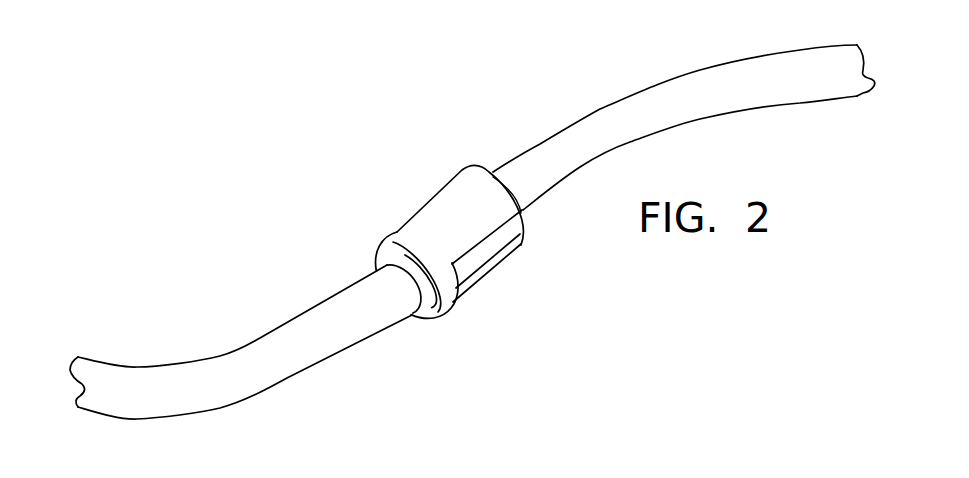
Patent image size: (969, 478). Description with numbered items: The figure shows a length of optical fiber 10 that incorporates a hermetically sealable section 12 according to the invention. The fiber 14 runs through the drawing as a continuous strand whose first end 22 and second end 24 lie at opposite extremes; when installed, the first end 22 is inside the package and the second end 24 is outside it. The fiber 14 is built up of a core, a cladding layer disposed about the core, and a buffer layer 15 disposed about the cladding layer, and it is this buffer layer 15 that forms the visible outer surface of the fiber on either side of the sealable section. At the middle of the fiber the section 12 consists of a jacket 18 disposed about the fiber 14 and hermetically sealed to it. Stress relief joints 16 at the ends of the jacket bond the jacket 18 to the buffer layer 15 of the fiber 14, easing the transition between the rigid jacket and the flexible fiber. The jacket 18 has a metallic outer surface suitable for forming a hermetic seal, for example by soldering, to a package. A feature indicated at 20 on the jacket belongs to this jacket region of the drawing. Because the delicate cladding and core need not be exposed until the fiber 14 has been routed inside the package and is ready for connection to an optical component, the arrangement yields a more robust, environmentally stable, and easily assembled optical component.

The length of optical fiber 10 is at (233, 258).
The hermetically sealable section 12 is at (412, 186).
The optical fiber 14 is at (186, 413).
The buffer layer 15 is at (246, 378).
The stress relief joints 16 is at (428, 318).
The jacket 18 is at (483, 267).
The connector body 20 is at (473, 188).
The first end of the fiber 22 is at (73, 380).
The second end of the fiber 24 is at (875, 78).